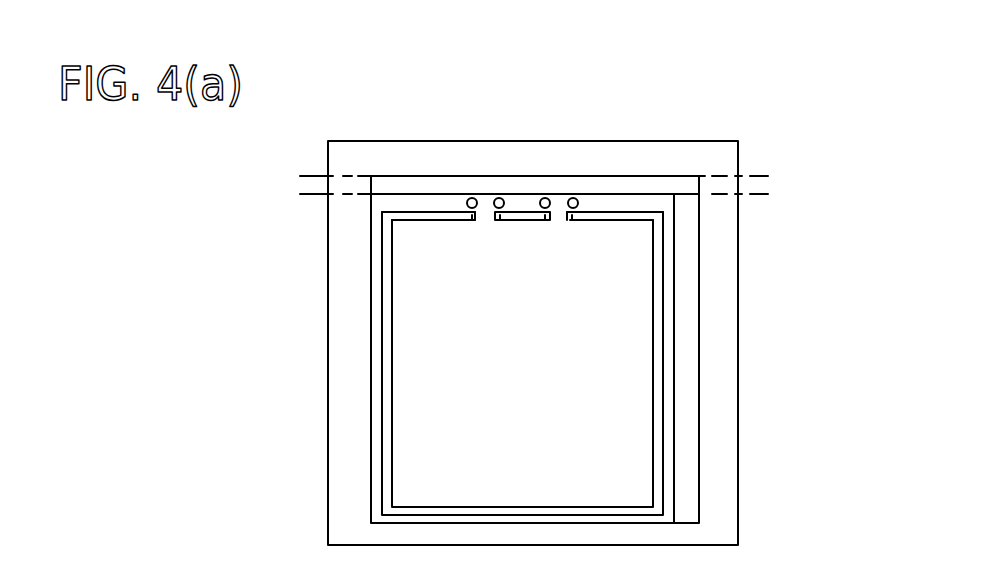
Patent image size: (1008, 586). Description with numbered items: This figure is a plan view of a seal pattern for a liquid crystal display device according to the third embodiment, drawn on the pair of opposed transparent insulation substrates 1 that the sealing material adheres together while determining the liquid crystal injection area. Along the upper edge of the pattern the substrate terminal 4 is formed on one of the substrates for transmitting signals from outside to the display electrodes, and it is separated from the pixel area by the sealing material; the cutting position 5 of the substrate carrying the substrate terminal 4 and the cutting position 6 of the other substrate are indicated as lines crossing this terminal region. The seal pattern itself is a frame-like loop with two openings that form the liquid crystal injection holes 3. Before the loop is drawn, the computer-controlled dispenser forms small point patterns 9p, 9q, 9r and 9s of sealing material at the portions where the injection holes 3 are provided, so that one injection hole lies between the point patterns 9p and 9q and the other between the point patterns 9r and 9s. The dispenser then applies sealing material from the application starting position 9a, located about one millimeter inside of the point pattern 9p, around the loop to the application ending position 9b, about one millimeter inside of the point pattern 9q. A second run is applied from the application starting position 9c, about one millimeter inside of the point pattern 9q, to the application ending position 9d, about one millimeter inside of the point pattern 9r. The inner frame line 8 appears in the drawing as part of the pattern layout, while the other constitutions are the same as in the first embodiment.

The transparent insulation substrates 1 is at (720, 482).
The liquid crystal injection hole 3 is at (497, 198).
The substrate terminal 4 is at (665, 185).
The cutting position 5 is at (755, 178).
The cutting position 6 is at (755, 196).
The coil 8 is at (670, 418).
The application starting position 9a is at (475, 221).
The application ending position 9b is at (575, 221).
The application starting position 9c is at (498, 221).
The application ending position 9d is at (557, 220).
The point pattern 9p is at (469, 199).
The point pattern 9q is at (486, 215).
The point pattern 9r is at (545, 198).
The point pattern 9s is at (575, 198).